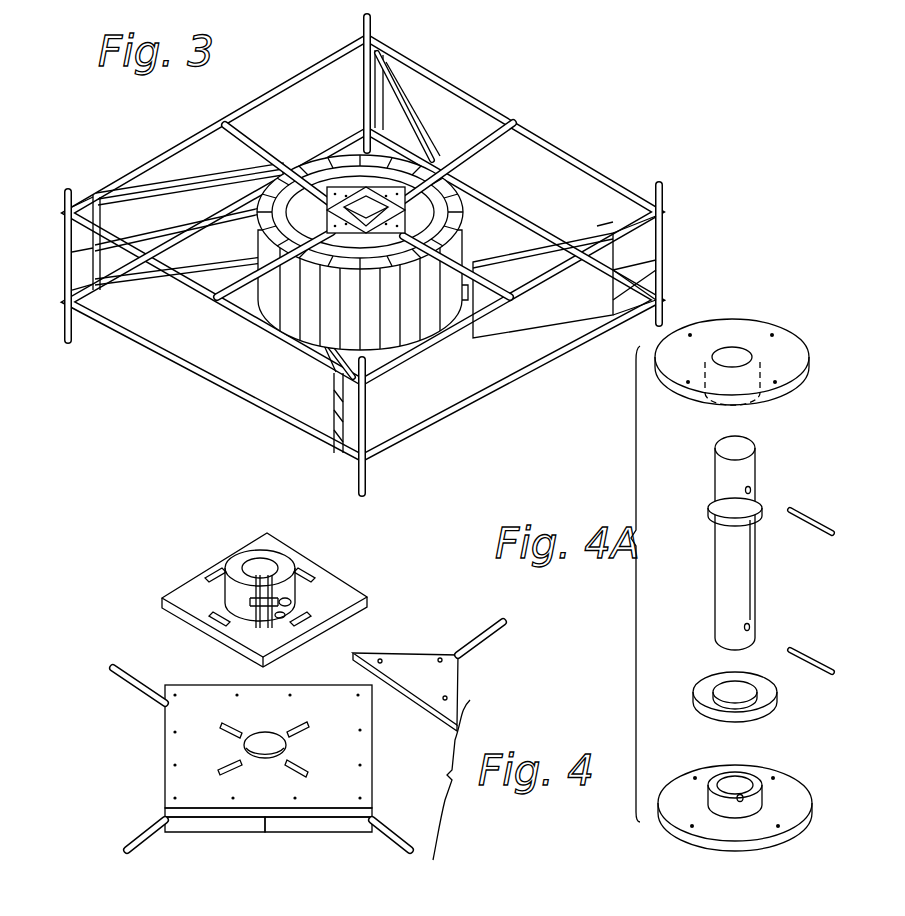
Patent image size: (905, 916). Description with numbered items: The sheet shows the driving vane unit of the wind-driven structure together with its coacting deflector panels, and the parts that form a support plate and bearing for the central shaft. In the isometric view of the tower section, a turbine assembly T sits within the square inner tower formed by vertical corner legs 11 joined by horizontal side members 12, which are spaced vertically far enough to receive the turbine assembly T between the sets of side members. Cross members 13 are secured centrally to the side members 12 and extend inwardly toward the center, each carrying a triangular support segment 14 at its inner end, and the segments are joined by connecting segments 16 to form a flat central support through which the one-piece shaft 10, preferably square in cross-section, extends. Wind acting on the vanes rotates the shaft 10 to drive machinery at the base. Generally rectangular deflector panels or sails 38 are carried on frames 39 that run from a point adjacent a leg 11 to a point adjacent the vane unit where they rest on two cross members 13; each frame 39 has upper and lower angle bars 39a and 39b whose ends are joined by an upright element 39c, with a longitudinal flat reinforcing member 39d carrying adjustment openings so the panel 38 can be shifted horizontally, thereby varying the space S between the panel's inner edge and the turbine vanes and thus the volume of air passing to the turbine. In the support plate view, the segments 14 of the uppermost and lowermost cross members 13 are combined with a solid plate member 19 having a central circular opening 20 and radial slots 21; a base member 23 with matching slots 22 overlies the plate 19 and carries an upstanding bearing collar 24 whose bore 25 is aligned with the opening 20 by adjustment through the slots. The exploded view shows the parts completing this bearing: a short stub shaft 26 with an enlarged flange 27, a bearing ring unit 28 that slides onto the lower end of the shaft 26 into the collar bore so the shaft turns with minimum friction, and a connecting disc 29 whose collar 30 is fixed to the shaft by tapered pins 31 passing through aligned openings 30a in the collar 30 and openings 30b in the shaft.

In FIG. 3, the shaft 10 is at (345, 188).
In FIG. 3, the corner legs 11 is at (362, 22).
In FIG. 3, the side members 12 is at (312, 68).
In FIG. 3, the cross members 13 is at (237, 125).
In FIG. 4, the cross members 13 is at (505, 622).
In FIG. 4, the support segment 14 is at (436, 682).
In FIG. 3, the connecting segments 16 is at (409, 198).
In FIG. 3, the solid plate member 19 is at (326, 183).
In FIG. 4, the solid plate member 19 is at (165, 738).
In FIG. 4, the central circular opening 20 is at (266, 743).
In FIG. 4, the radial slots 21 is at (300, 720).
In FIG. 4, the slots 22 is at (360, 602).
In FIG. 4, the base member 23 is at (455, 633).
In FIG. 4, the bearing collar 24 is at (272, 552).
In FIG. 4, the bore 25 is at (248, 565).
In FIG. 4A, the stub shaft 26 is at (757, 460).
In FIG. 4A, the enlarged flange 27 is at (710, 510).
In FIG. 4A, the bearing ring unit 28 is at (775, 688).
In FIG. 4A, the connecting disc 29 is at (800, 357).
In FIG. 4A, the collar 30 is at (708, 403).
In FIG. 4A, the openings 30a is at (735, 357).
In FIG. 4A, the openings 30b is at (745, 630).
In FIG. 4A, the tapered pins 31 is at (797, 650).
In FIG. 3, the deflector panel 38 is at (218, 178).
In FIG. 3, the frame 39 is at (595, 225).
In FIG. 3, the upper angle bar 39a is at (143, 200).
In FIG. 3, the lower angle bar 39b is at (141, 286).
In FIG. 3, the upright element 39c is at (640, 242).
In FIG. 3, the flat reinforcing member 39d is at (228, 183).
In FIG. 3, the turbine assembly T is at (258, 240).
In FIG. 3, the space S is at (466, 292).